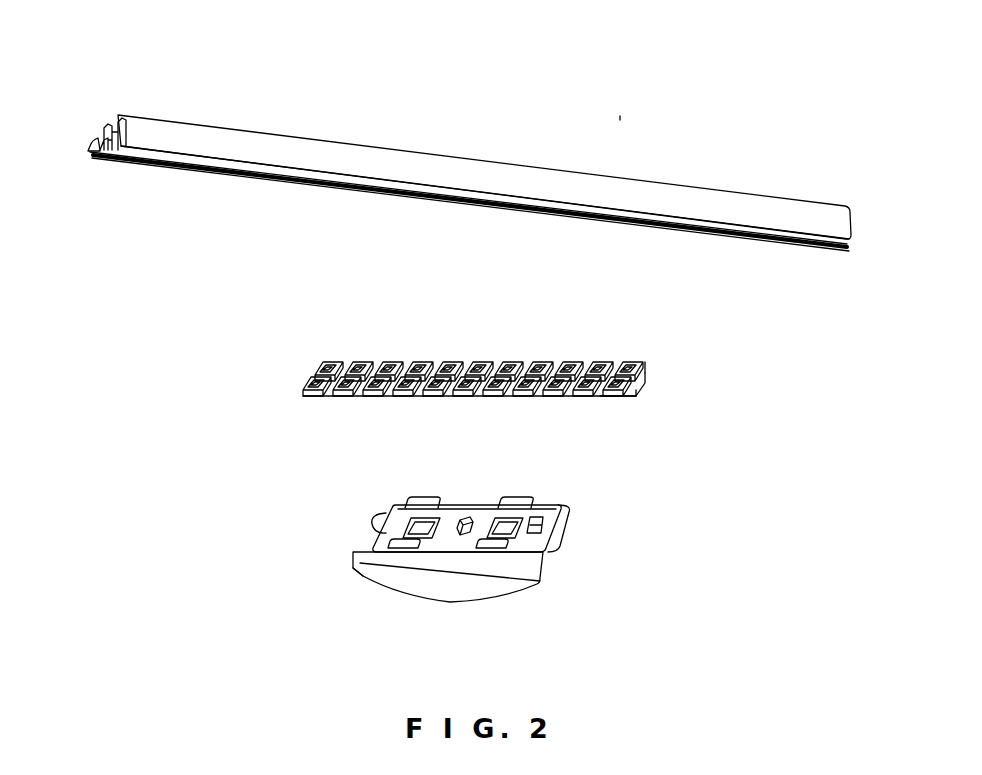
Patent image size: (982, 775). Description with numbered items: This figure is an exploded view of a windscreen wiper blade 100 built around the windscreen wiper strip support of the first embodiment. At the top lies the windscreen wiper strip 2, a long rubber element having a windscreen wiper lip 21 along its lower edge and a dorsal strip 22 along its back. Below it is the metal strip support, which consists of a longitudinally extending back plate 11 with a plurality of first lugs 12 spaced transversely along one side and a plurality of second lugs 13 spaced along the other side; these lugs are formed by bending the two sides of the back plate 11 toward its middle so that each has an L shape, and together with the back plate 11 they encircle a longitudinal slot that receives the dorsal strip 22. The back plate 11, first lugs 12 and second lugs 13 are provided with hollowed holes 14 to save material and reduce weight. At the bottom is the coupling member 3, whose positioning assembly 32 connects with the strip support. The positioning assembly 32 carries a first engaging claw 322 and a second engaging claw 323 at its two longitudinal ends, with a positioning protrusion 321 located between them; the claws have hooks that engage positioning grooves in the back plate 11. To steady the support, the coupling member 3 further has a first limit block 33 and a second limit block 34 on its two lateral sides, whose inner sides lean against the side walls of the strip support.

The windscreen wiper blade 100 is at (623, 118).
The windscreen wiper strip 2 is at (116, 119).
The windscreen wiper lip 21 is at (88, 148).
The dorsal strip 22 is at (196, 132).
The back plate 11 is at (640, 392).
The first lugs 12 is at (645, 368).
The second lugs 13 is at (613, 397).
The hollowed holes 14 is at (510, 358).
The coupling member 3 is at (507, 584).
The positioning assembly 32 is at (373, 518).
The first engaging claw 322 is at (379, 523).
The positioning protrusion 321 is at (470, 517).
The second engaging claw 323 is at (547, 527).
The first limit block 33 is at (390, 546).
The second limit block 34 is at (422, 499).